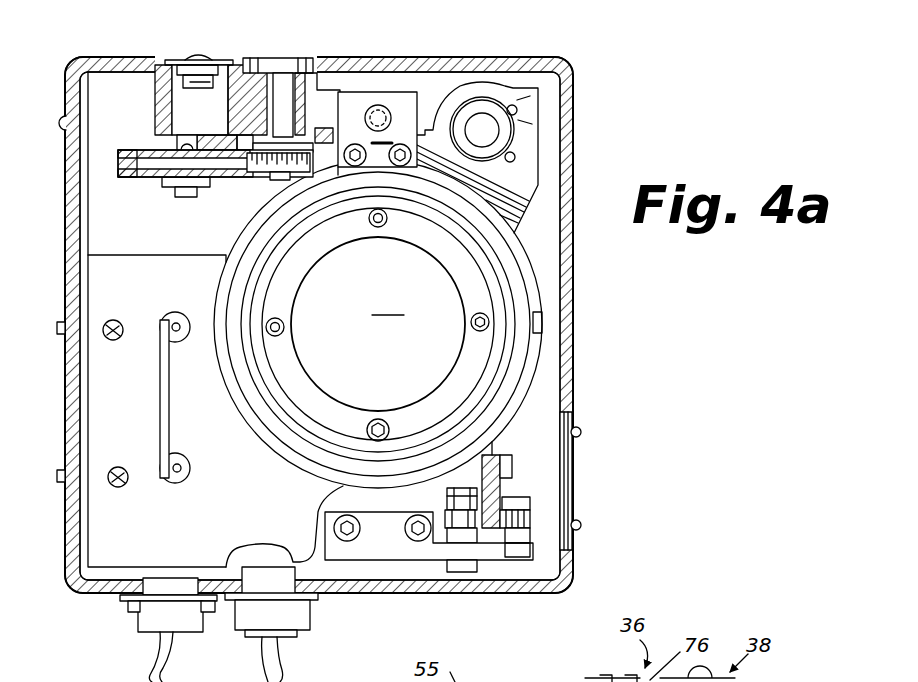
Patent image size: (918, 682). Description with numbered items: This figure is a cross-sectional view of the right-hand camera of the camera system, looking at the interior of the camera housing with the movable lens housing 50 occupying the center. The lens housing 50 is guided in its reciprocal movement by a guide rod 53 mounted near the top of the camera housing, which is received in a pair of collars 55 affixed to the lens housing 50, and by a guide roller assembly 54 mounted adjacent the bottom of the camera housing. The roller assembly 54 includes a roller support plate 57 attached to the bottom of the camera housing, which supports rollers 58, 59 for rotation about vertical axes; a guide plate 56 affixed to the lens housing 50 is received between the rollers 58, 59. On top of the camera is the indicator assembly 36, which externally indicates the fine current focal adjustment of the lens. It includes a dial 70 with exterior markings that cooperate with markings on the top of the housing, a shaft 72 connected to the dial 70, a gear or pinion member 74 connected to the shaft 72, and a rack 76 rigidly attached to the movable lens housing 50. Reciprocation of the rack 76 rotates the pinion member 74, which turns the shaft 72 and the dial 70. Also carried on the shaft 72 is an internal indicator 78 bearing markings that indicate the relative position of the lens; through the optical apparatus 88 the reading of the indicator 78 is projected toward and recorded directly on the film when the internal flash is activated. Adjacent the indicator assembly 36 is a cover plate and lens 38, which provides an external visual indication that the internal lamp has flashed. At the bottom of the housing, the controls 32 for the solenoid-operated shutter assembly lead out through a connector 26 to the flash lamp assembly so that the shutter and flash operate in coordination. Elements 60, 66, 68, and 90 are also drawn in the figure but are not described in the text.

The connector 26 is at (174, 652).
The controls 32 is at (305, 648).
The indicator assembly 36 is at (293, 33).
The cover plate and lens 38 is at (181, 50).
The lens housing 50 is at (517, 300).
The guide rod 53 is at (490, 140).
The guide roller assembly 54 is at (517, 548).
The collars 55 is at (517, 110).
The guide plate 56 is at (504, 468).
The roller support plate 57 is at (492, 554).
The roller 58 is at (447, 506).
The roller 59 is at (530, 518).
The hinge 60 is at (578, 478).
The bearing boss 66 is at (394, 118).
The block 68 is at (358, 102).
The dial 70 is at (248, 56).
The shaft 72 is at (277, 117).
The gear member 74 is at (273, 178).
The rack 76 is at (321, 130).
The internal indicator 78 is at (283, 186).
The optical apparatus 88 is at (148, 122).
The housing 90 is at (66, 122).